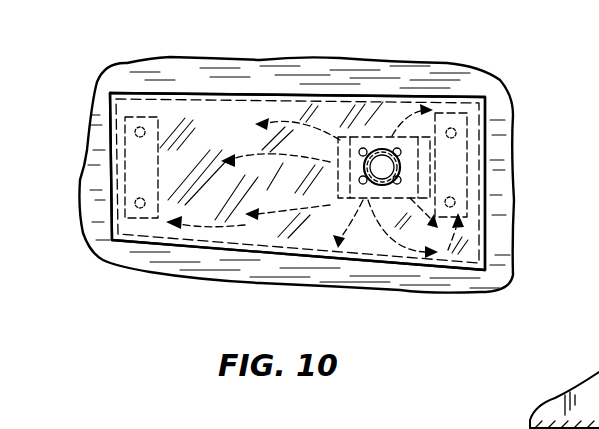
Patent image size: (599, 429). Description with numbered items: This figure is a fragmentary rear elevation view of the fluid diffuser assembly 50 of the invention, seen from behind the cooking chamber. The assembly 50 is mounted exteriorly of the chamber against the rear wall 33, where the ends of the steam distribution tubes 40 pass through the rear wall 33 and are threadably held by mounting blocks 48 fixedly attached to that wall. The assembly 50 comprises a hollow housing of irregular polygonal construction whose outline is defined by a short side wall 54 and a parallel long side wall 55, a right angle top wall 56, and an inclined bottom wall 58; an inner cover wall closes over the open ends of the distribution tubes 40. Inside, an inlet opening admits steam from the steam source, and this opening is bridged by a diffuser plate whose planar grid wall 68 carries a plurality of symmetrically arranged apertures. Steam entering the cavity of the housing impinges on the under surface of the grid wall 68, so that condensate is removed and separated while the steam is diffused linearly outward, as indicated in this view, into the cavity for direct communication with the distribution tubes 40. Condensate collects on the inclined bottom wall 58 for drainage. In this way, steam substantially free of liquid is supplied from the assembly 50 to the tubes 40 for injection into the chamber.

The rear wall 33 is at (448, 65).
The fluid diffuser assembly 50 is at (278, 94).
The right angle top wall 56 is at (177, 97).
The short side wall 54 is at (110, 128).
The long side wall 55 is at (485, 240).
The inclined bottom wall 58 is at (210, 250).
The mounting blocks 48 is at (138, 155).
The distribution tubes 40 is at (140, 205).
The planar grid wall 68 is at (367, 200).